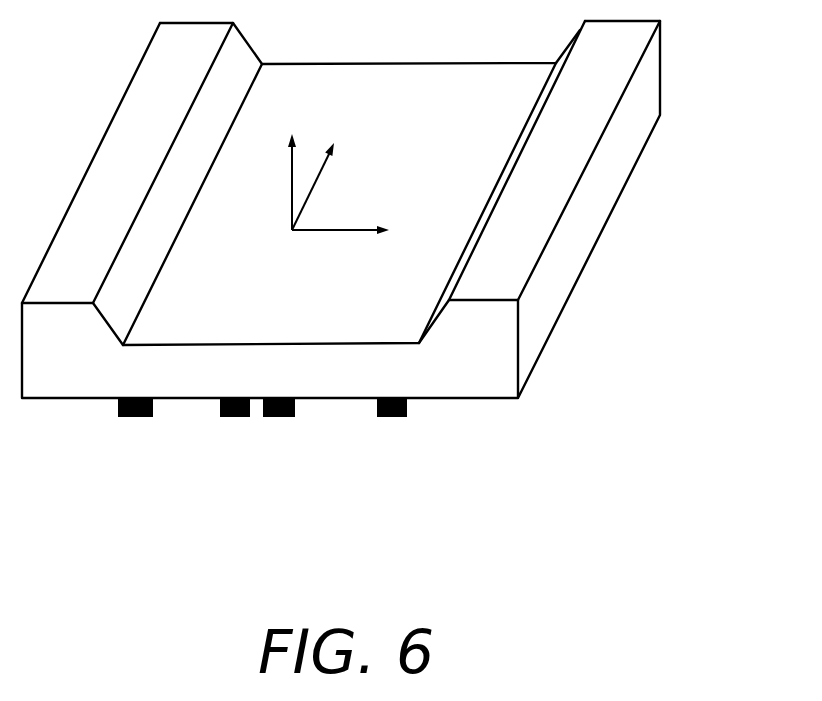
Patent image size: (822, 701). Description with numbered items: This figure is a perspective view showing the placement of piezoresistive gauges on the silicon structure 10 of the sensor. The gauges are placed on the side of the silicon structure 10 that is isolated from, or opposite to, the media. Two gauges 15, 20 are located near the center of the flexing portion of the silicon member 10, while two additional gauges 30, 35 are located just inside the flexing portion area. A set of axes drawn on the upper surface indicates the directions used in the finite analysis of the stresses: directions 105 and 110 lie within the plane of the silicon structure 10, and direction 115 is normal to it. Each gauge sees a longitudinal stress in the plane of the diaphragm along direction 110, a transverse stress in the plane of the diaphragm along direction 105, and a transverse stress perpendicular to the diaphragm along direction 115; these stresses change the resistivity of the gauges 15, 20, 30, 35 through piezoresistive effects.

The silicon structure 10 is at (712, 92).
The gauge 15 is at (280, 426).
The gauge 20 is at (233, 426).
The gauge 30 is at (398, 430).
The gauge 35 is at (137, 424).
The direction 105 is at (333, 186).
The direction 110 is at (340, 245).
The direction 115 is at (274, 182).